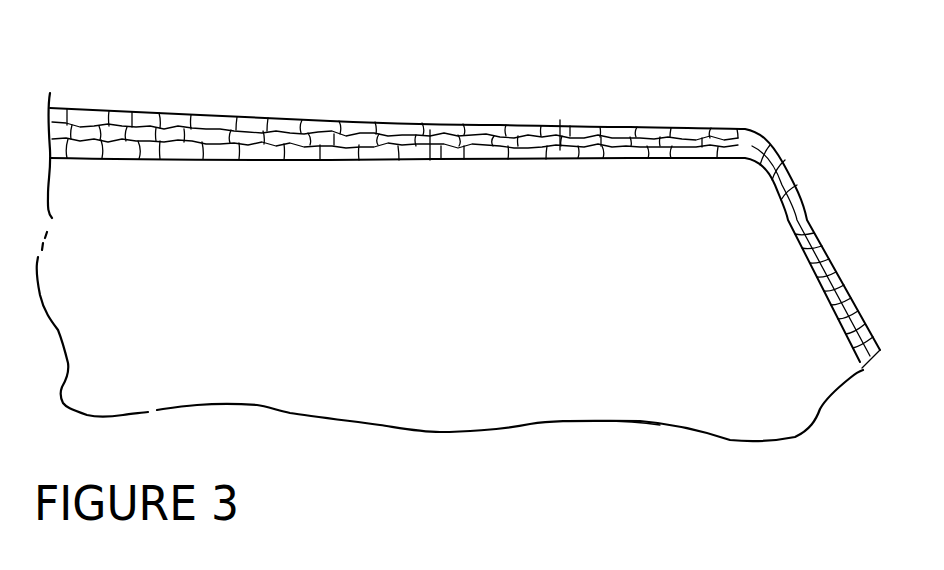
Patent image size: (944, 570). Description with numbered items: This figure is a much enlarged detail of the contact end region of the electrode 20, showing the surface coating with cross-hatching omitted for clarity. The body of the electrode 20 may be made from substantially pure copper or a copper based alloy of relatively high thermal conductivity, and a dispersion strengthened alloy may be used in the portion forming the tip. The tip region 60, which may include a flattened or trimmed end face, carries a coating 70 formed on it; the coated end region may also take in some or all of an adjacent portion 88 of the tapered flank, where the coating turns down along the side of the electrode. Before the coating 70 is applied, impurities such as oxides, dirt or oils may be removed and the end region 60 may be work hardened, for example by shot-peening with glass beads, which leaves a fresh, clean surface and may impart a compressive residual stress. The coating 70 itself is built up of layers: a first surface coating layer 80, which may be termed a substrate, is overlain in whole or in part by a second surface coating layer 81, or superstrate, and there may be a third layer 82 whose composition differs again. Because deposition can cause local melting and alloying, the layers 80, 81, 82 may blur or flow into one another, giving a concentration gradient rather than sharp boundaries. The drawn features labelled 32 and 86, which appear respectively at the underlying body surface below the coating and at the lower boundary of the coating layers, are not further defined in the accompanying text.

The substrate 20 is at (545, 392).
The substrate surface 32 is at (637, 403).
The multilayer coating 60 is at (465, 201).
The outer layer 70 is at (306, 136).
The intermediate layer 80 is at (467, 141).
The grain boundary 81 is at (560, 150).
The inner layer 82 is at (530, 131).
The bond layer 86 is at (400, 160).
The coating edge portion 88 is at (789, 208).